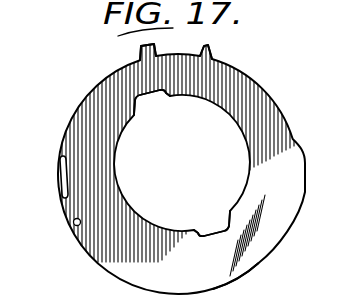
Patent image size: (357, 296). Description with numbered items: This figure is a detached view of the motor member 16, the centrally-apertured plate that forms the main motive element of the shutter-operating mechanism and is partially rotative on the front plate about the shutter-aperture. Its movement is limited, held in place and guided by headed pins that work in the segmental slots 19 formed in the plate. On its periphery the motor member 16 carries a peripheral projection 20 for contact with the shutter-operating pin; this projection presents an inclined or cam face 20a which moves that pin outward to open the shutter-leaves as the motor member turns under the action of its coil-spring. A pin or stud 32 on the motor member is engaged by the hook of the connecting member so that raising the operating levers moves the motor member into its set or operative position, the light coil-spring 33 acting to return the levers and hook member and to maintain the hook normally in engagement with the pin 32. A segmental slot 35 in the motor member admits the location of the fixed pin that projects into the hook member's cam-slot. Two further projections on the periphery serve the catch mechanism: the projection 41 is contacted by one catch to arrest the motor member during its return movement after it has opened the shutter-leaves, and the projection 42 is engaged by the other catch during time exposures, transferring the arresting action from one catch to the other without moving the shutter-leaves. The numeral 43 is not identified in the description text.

The motor member 16 is at (164, 187).
The segmental slots 19 is at (151, 97).
The peripheral projection 20 is at (233, 291).
The inclined or cam face 20a is at (245, 279).
The pin or stud 32 is at (75, 224).
The light coil-spring 33 is at (22, 9).
The segmental slot 35 is at (62, 181).
The projection 41 is at (212, 51).
The projection 42 is at (141, 49).
The member 43 is at (222, 2).